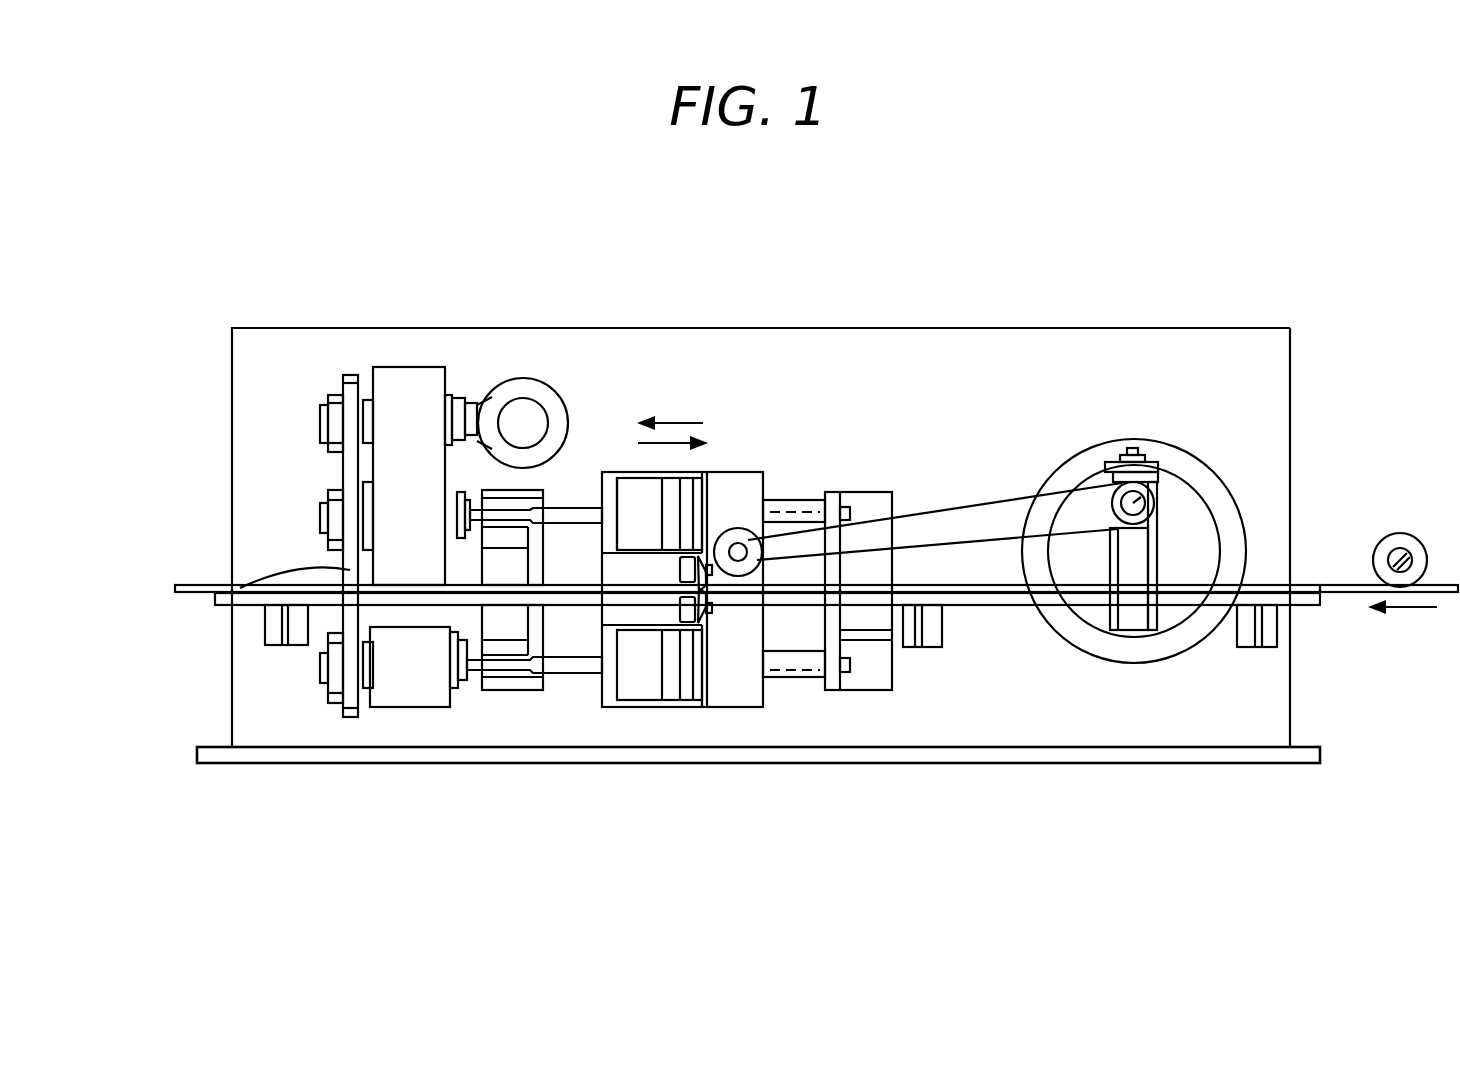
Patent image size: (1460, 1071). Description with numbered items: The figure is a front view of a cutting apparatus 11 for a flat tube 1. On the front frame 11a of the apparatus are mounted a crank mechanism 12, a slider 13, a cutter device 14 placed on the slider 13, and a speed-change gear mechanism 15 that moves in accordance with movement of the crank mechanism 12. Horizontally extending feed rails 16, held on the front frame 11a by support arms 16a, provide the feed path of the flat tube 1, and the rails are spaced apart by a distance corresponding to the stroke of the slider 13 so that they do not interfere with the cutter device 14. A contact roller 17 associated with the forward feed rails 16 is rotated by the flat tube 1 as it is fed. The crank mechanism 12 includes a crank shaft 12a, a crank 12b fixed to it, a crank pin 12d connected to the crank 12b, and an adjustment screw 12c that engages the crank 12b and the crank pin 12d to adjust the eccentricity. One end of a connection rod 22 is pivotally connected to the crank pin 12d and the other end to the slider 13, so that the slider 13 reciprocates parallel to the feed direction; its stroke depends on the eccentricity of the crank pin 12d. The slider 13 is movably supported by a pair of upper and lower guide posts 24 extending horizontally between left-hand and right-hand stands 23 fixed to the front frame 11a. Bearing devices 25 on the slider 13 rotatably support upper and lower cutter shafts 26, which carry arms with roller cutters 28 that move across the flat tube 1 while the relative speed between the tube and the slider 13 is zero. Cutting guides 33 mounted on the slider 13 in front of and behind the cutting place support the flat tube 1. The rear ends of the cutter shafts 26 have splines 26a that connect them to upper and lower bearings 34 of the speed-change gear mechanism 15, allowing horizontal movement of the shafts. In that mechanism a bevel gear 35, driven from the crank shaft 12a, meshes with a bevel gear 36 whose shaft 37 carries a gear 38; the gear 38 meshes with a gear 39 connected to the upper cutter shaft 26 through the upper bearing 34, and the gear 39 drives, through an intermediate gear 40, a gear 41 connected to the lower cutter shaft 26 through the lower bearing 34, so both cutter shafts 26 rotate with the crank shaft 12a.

The flat tube 1 is at (1345, 584).
The cutting apparatus 11 is at (987, 305).
The front frame 11a is at (1268, 380).
The crank mechanism 12 is at (1020, 475).
The crank shaft 12a is at (1203, 520).
The crank 12b is at (1130, 623).
The adjustment screw 12c is at (1133, 448).
The crank pin 12d is at (1140, 500).
The slider 13 is at (745, 480).
The cutter device 14 is at (716, 663).
The speed-change gear mechanism 15 is at (381, 352).
The feed rails 16 is at (245, 591).
The support arms 16a is at (272, 637).
The contact roller 17 is at (1412, 545).
The connection rod 22 is at (940, 517).
The stands 23 is at (575, 512).
The guide posts 24 is at (793, 510).
The bearing devices 25 is at (640, 488).
The cutter shafts 26 is at (628, 488).
The splines 26a is at (497, 512).
The roller cutters 28 is at (707, 557).
The cutting guides 33 is at (684, 623).
The bearings 34 is at (453, 492).
The bevel gear 35 is at (505, 385).
The bevel gear 36 is at (452, 398).
The shaft 37 is at (440, 420).
The gear 38 is at (340, 407).
The gear 39 is at (345, 530).
The intermediate gear 40 is at (217, 600).
The gear 41 is at (348, 716).